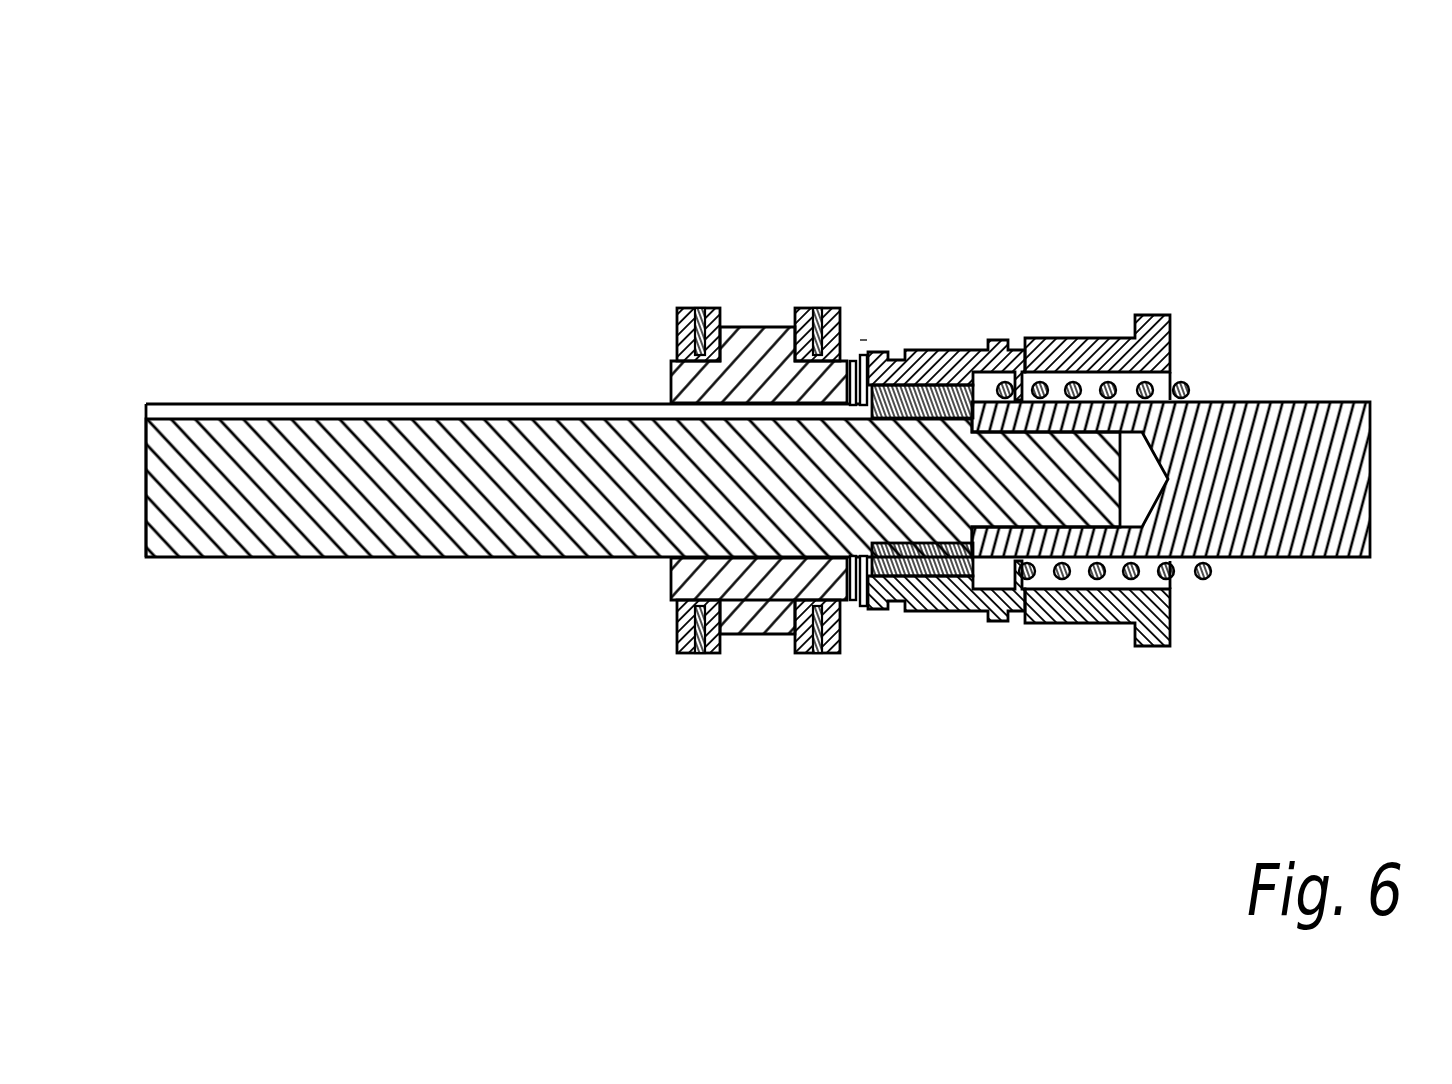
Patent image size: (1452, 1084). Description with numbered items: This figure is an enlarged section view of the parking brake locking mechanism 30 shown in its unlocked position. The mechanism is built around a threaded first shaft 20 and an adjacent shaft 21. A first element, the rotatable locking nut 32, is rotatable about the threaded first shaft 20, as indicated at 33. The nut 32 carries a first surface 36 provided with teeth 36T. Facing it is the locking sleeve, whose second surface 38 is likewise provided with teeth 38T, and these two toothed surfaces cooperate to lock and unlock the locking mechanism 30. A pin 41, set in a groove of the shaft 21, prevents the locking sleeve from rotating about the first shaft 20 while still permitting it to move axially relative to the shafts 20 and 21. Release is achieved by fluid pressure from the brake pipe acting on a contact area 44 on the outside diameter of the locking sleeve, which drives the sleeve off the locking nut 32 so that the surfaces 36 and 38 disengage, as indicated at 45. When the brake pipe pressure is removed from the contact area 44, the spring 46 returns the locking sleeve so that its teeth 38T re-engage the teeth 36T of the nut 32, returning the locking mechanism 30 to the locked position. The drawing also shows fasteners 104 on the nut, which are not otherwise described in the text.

The threaded first shaft 20 is at (318, 562).
The shaft 21 is at (1313, 558).
The parking brake locking mechanism 30 is at (969, 210).
The rotatable locking nut 32 is at (668, 572).
The rotation of locking nut about first shaft 33 is at (744, 408).
The first surface 36 is at (793, 638).
The teeth 36T is at (852, 602).
The second surface 38 is at (864, 350).
The teeth 38T is at (866, 606).
The pin 41 is at (963, 350).
The contact area 44 is at (950, 619).
The disengagement of surfaces 45 is at (864, 332).
The spring 46 is at (1207, 584).
The fasteners 104 is at (802, 304).